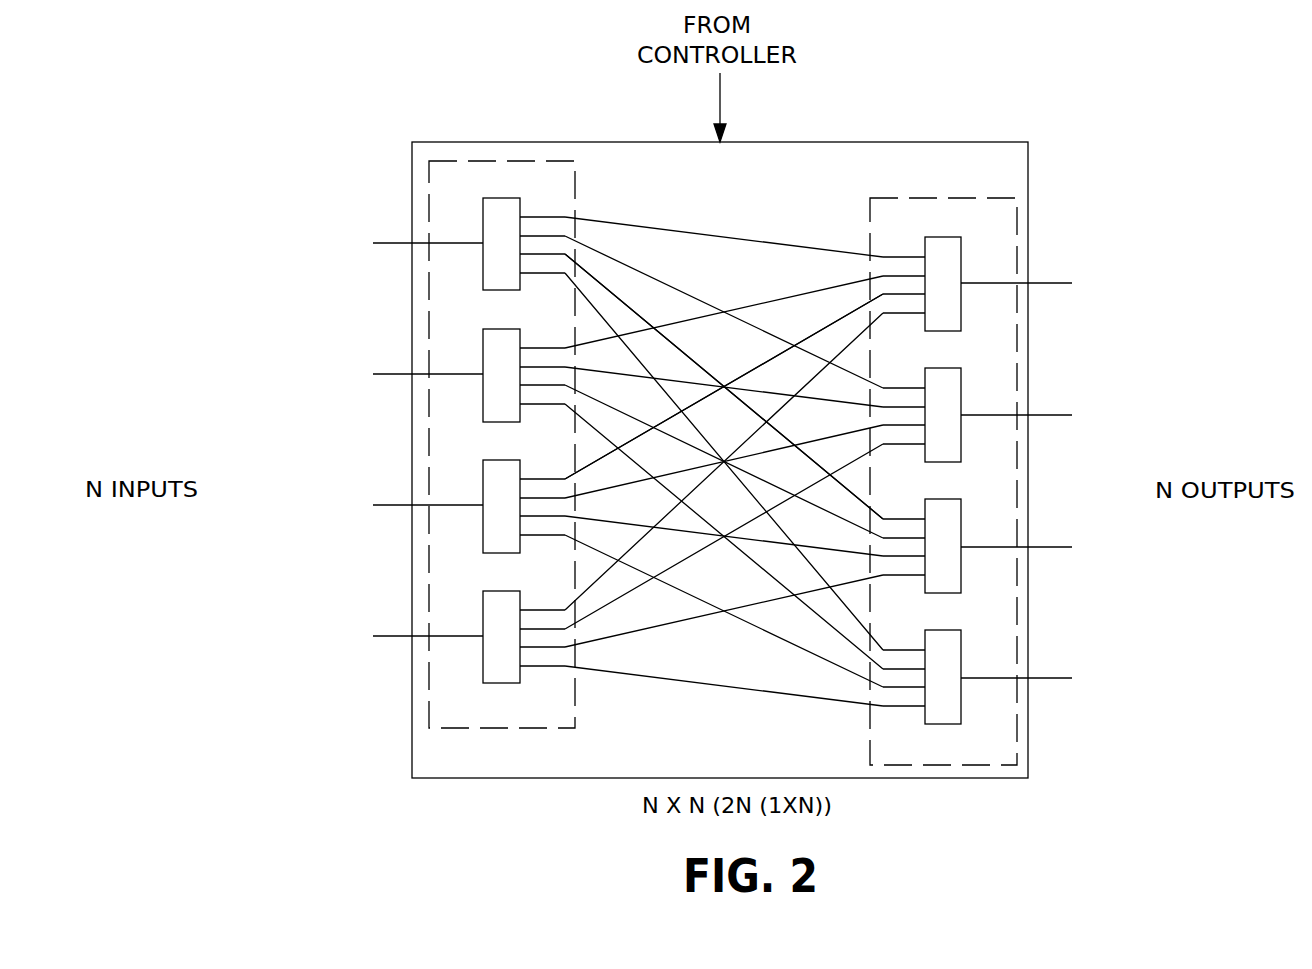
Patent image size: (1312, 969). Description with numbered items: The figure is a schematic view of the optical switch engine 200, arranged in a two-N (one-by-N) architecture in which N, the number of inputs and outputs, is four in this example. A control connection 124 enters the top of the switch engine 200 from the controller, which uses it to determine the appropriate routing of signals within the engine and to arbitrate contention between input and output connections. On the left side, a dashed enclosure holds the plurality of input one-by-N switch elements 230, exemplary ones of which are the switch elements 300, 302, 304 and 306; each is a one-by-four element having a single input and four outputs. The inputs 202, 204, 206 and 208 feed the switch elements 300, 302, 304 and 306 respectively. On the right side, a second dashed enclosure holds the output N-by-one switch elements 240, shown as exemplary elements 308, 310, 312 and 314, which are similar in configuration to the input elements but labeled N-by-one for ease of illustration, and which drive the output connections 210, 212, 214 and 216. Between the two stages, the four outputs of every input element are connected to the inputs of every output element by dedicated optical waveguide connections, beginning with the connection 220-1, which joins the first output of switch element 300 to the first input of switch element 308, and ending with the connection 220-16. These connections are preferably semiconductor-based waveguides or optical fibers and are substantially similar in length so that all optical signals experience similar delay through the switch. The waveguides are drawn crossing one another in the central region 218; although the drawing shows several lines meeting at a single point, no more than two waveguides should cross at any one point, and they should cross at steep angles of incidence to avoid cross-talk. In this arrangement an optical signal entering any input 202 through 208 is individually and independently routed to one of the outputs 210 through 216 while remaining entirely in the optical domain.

The connection 124 is at (720, 90).
The optical switch engine 200 is at (714, 176).
The input connection 202 is at (390, 242).
The input connection 204 is at (390, 373).
The input connection 206 is at (390, 504).
The input connection 208 is at (390, 635).
The output connection 210 is at (1047, 283).
The output connection 212 is at (1047, 415).
The output connection 214 is at (1047, 547).
The output connection 216 is at (1047, 678).
The waveguide crossing 218 is at (722, 370).
The connection 220-1 is at (622, 224).
The connection 220-16 is at (635, 673).
The input 1×N switch elements 230 is at (477, 723).
The output N×1 switch elements 240 is at (917, 762).
The 1×N switch element 300 is at (502, 198).
The 1×N switch element 302 is at (501, 329).
The 1×N switch element 304 is at (501, 460).
The 1×N switch element 306 is at (501, 591).
The N×1 switch element 308 is at (945, 237).
The N×1 switch element 310 is at (944, 368).
The N×1 switch element 312 is at (945, 499).
The N×1 switch element 314 is at (944, 630).